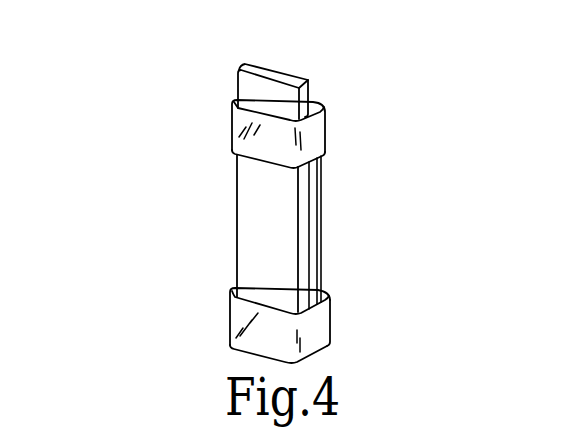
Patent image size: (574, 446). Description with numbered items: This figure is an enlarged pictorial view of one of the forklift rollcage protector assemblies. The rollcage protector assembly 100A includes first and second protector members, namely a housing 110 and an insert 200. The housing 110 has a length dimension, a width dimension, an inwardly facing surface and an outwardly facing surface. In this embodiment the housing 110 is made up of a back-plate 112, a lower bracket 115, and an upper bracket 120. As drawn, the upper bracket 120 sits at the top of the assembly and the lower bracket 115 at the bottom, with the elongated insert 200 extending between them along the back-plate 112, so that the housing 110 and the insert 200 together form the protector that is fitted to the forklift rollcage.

The rollcage protector assembly 100A is at (182, 91).
The upper bracket 120 is at (330, 133).
The insert 200 is at (222, 216).
The back-plate 112 is at (317, 214).
The housing 110 is at (218, 316).
The lower bracket 115 is at (330, 326).